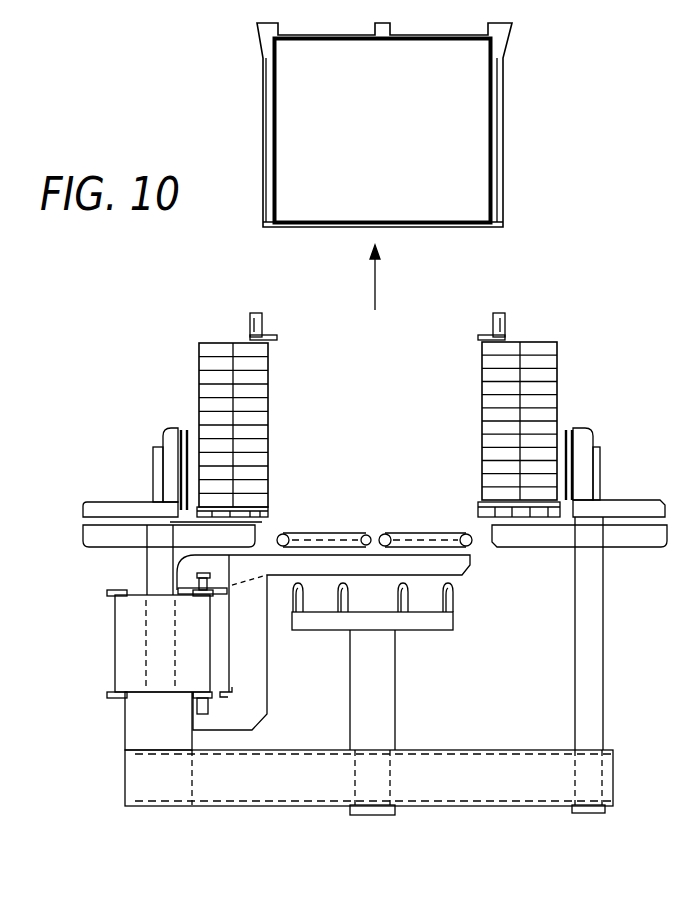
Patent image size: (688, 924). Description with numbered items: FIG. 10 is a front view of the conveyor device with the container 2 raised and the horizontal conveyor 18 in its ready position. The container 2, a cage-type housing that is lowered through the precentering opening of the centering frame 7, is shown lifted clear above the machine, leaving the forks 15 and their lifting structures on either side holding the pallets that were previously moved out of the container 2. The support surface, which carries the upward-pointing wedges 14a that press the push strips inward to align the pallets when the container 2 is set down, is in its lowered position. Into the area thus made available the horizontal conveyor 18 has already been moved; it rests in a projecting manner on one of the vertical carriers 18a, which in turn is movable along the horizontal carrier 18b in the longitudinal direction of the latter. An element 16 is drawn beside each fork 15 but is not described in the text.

The container 2 is at (503, 118).
The centering frame 7 is at (256, 313).
The wedges 14a is at (452, 596).
The forks 15 is at (185, 428).
The clamp member 16 is at (165, 470).
The horizontal conveyor 18 is at (432, 546).
The vertical carrier 18a is at (143, 723).
The horizontal carrier 18b is at (283, 773).